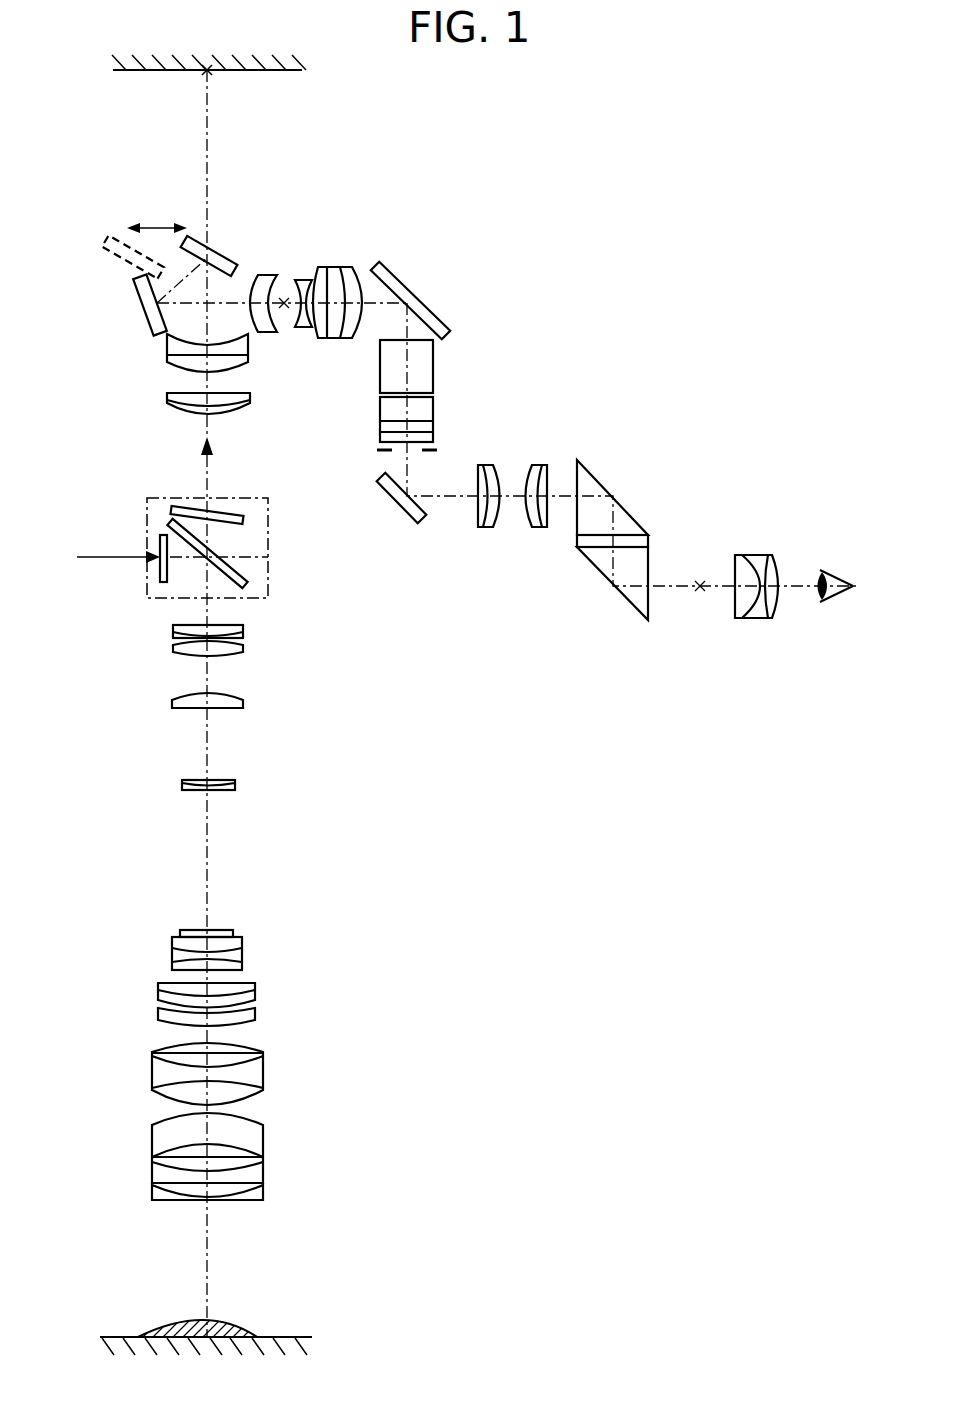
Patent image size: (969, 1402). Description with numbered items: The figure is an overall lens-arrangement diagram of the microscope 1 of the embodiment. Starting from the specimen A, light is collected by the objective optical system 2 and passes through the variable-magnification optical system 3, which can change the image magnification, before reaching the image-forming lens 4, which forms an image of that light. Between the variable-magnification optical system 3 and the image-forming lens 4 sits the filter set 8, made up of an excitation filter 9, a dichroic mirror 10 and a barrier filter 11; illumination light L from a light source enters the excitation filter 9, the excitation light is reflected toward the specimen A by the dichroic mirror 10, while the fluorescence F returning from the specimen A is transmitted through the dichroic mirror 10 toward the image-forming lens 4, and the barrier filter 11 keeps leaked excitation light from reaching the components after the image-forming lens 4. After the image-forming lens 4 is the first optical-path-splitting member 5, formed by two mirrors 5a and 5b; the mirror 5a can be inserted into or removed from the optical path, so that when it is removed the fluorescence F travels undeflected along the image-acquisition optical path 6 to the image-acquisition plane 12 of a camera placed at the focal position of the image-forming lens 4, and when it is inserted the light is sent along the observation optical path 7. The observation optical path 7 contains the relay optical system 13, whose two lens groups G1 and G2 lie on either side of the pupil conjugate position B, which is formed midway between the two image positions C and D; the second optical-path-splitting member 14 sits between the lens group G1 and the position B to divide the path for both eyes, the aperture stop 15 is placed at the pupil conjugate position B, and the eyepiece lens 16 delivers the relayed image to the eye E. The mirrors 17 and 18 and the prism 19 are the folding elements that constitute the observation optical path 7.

The microscope 1 is at (537, 790).
The objective optical system 2 is at (272, 1033).
The variable-magnification optical system 3 is at (272, 620).
The image-forming lens 4 is at (150, 335).
The first optical-path-splitting member 5 is at (98, 205).
The mirror 5a is at (125, 236).
The mirror 5b is at (143, 315).
The image-acquisition optical path 6 is at (249, 158).
The observation optical path 7 is at (518, 368).
The filter set 8 is at (157, 600).
The excitation filter 9 is at (160, 545).
The dichroic mirror 10 is at (243, 580).
The barrier filter 11 is at (236, 522).
The image-acquisition plane 12 is at (283, 73).
The relay optical system 13 is at (255, 383).
The second optical-path-splitting member 14 is at (434, 363).
The aperture stop 15 is at (438, 455).
The eyepiece lens 16 is at (782, 548).
The mirror 17 is at (392, 275).
The mirror 18 is at (400, 505).
The prism 19 is at (623, 502).
The specimen A is at (242, 1335).
The pupil conjugate position B is at (357, 450).
The image position C is at (285, 258).
The image position D is at (700, 554).
The eye E is at (828, 577).
The fluorescence F is at (207, 473).
The illumination light L is at (107, 562).
The lens group G1 is at (360, 343).
The lens group G2 is at (552, 455).